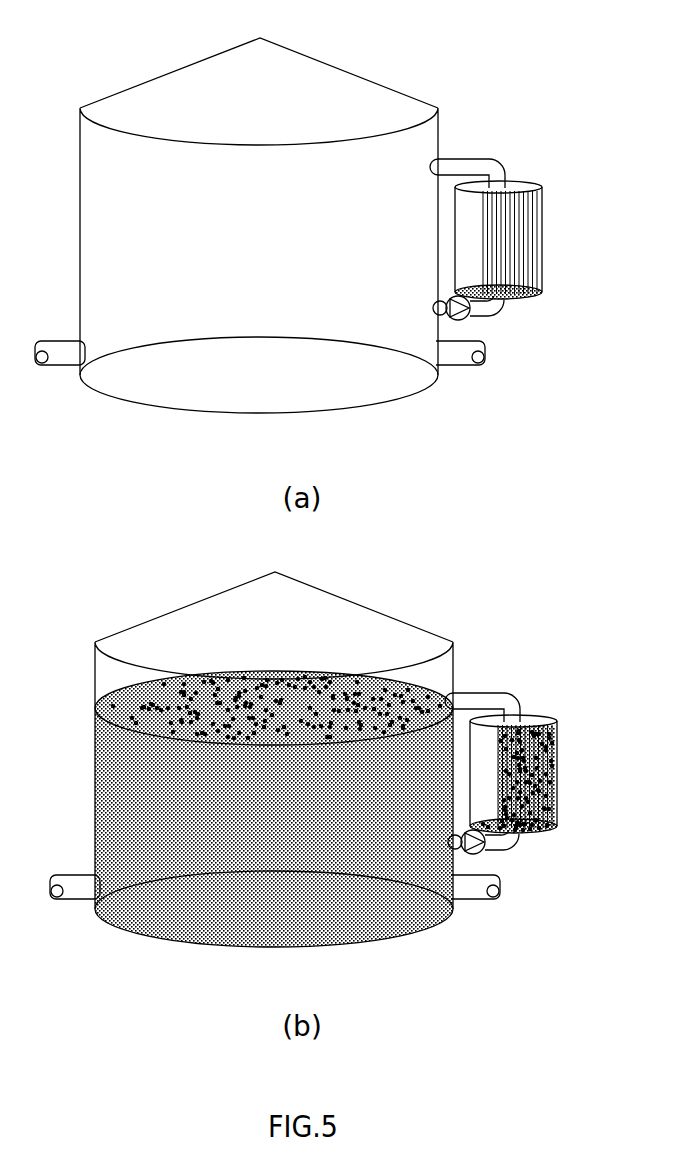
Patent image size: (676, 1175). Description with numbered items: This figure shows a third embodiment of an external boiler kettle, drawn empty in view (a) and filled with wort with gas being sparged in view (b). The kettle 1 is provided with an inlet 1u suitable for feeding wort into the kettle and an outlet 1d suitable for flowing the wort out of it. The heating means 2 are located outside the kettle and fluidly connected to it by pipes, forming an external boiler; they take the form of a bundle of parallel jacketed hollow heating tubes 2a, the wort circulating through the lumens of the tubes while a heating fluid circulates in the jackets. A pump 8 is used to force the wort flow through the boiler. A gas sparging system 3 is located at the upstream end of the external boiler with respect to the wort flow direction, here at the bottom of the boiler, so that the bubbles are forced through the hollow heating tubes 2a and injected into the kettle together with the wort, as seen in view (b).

The kettle 1 is at (134, 52).
The inlet 1u is at (74, 338).
The outlet 1d is at (453, 368).
The heating means 2 is at (540, 184).
The hollow heating tubes 2a is at (258, 809).
The pump 3 is at (512, 299).
The pump 8 is at (456, 297).